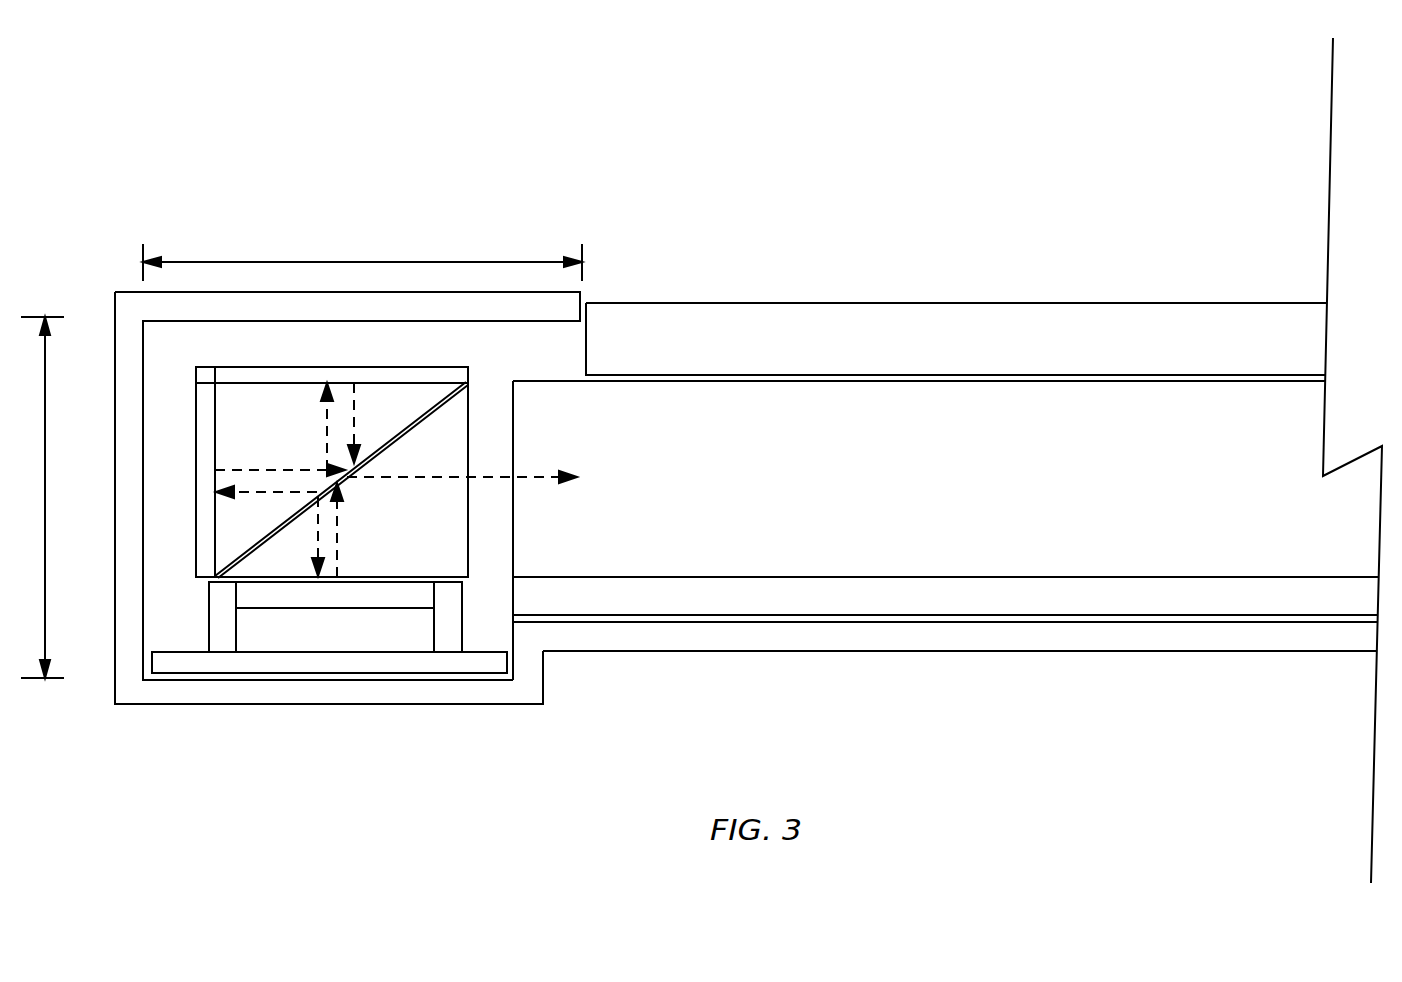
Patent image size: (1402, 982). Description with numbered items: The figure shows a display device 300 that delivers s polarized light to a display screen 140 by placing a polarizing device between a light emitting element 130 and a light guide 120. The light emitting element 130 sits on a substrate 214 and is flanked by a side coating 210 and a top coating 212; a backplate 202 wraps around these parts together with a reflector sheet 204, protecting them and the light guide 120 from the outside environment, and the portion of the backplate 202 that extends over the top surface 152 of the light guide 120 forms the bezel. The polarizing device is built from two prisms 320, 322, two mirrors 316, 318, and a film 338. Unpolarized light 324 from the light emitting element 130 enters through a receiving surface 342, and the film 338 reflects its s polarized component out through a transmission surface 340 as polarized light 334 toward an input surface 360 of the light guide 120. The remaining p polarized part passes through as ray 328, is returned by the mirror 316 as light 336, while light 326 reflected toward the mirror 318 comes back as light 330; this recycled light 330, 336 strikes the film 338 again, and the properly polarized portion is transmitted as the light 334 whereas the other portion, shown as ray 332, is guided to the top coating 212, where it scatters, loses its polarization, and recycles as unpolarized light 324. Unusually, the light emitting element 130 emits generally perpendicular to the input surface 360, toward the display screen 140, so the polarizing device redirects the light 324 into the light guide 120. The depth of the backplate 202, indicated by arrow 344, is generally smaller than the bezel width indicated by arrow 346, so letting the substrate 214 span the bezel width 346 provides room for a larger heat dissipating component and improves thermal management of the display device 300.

The display device 300 is at (301, 151).
The arrow indicating bezel width 346 is at (383, 262).
The arrow indicating backplate depth 344 is at (45, 477).
The mirror 316 is at (392, 370).
The mirror 318 is at (210, 405).
The prism 322 is at (232, 390).
The receiving surface 342 is at (383, 573).
The transmission surface 340 is at (468, 448).
The prism 320 is at (457, 553).
The input surface 360 is at (515, 450).
The film 338 is at (468, 383).
The ray 328 is at (327, 440).
The light 330 is at (232, 470).
The light 336 is at (354, 440).
The polarized light 334 is at (533, 477).
The light 326 is at (252, 490).
The unpolarized light 324 is at (342, 540).
The ray 332 is at (318, 555).
The side coating 210 is at (225, 643).
The top coating 212 is at (291, 601).
The light emitting element 130 is at (337, 635).
The substrate 214 is at (395, 667).
The top surface 152 is at (673, 383).
The display screen 140 is at (1185, 318).
The light guide 120 is at (933, 387).
The reflector sheet 204 is at (1293, 580).
The backplate 202 is at (935, 652).